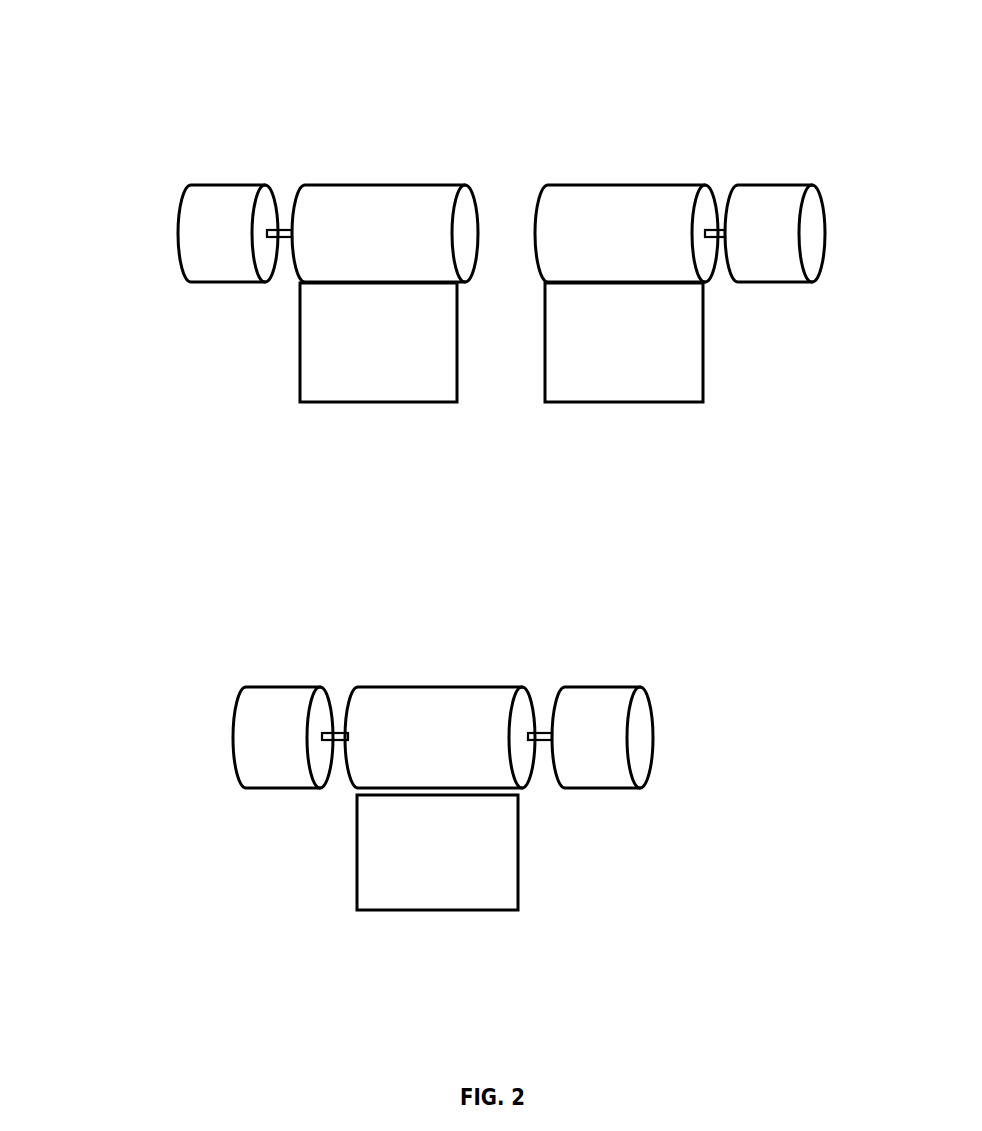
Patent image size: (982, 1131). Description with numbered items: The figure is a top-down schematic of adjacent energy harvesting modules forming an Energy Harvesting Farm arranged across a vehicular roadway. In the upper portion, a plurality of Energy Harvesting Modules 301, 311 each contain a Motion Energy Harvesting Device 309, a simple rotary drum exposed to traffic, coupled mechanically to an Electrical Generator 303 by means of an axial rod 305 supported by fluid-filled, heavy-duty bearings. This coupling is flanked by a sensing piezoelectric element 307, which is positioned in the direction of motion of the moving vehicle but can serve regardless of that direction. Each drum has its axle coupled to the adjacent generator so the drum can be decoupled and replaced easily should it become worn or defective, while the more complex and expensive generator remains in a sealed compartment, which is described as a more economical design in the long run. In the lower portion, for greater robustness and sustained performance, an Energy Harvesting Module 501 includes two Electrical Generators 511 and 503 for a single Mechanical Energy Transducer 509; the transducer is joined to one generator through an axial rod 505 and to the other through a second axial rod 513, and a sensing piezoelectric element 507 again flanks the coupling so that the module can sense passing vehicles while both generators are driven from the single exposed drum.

The Energy Harvesting Module 301 is at (281, 161).
The Electrical Generator 303 is at (212, 283).
The axial rod 305 is at (284, 238).
The sensing piezoelectric element 307 is at (300, 343).
The Motion Energy Harvesting Device 309 is at (397, 185).
The Energy Harvesting Module 311 is at (715, 169).
The Energy Harvesting Module 501 is at (339, 664).
The Electrical Generator 503 is at (265, 788).
The axial rod 505 is at (341, 742).
The sensing piezoelectric element 507 is at (357, 847).
The Mechanical Energy Transducer 509 is at (458, 687).
The Electrical Generator 511 is at (607, 789).
The axial rod 513 is at (543, 745).